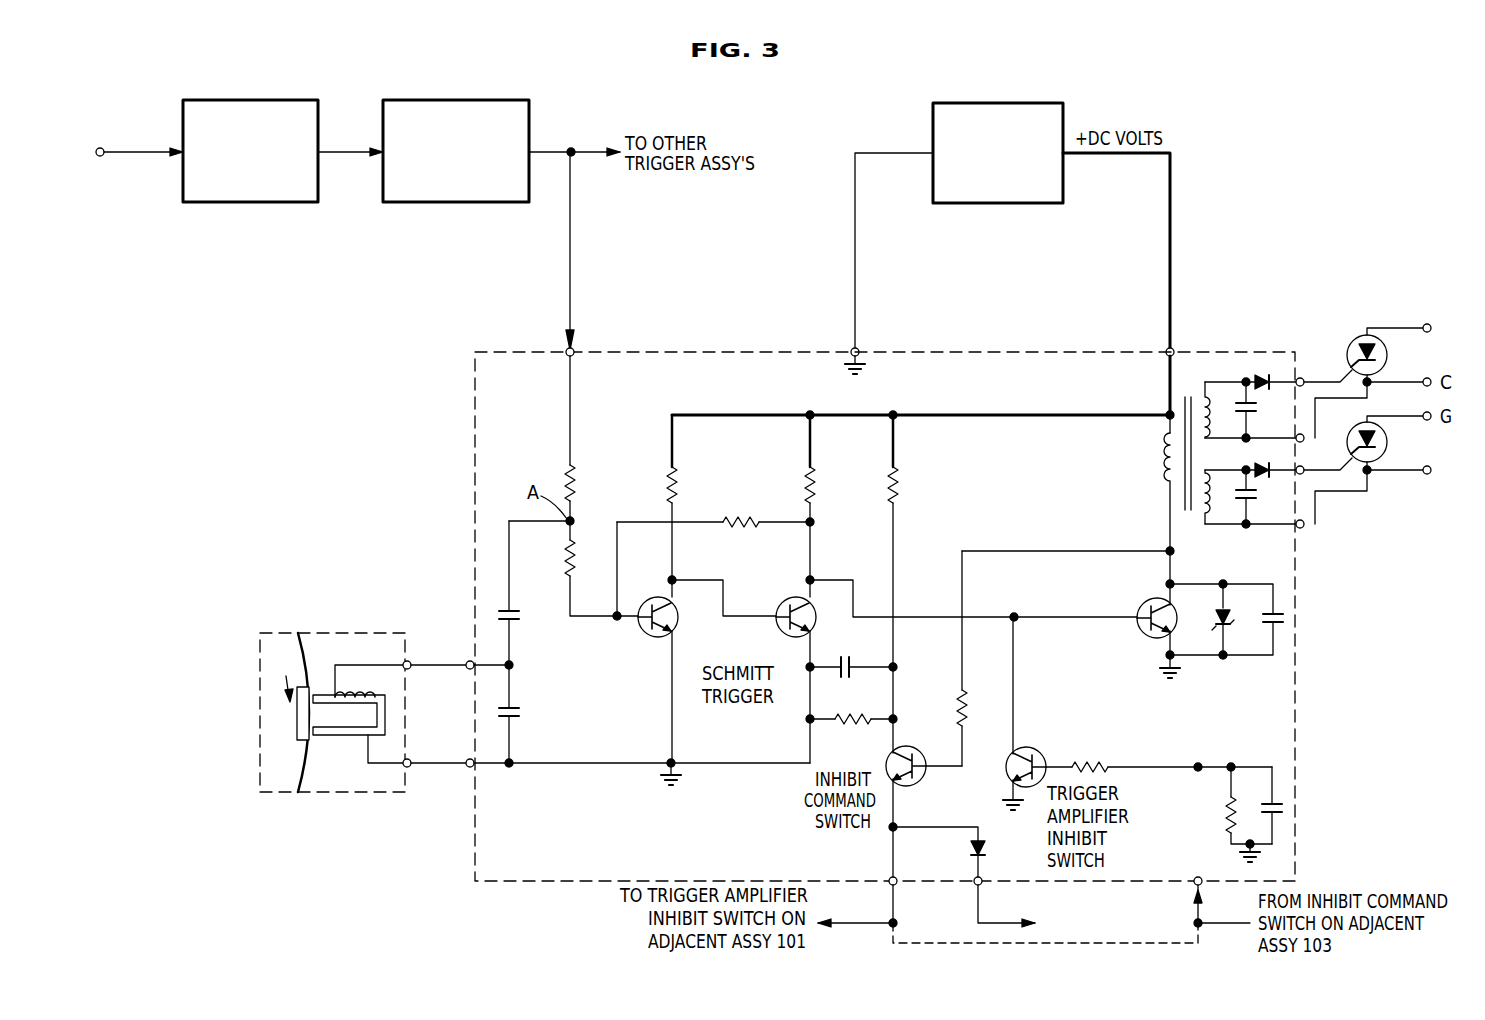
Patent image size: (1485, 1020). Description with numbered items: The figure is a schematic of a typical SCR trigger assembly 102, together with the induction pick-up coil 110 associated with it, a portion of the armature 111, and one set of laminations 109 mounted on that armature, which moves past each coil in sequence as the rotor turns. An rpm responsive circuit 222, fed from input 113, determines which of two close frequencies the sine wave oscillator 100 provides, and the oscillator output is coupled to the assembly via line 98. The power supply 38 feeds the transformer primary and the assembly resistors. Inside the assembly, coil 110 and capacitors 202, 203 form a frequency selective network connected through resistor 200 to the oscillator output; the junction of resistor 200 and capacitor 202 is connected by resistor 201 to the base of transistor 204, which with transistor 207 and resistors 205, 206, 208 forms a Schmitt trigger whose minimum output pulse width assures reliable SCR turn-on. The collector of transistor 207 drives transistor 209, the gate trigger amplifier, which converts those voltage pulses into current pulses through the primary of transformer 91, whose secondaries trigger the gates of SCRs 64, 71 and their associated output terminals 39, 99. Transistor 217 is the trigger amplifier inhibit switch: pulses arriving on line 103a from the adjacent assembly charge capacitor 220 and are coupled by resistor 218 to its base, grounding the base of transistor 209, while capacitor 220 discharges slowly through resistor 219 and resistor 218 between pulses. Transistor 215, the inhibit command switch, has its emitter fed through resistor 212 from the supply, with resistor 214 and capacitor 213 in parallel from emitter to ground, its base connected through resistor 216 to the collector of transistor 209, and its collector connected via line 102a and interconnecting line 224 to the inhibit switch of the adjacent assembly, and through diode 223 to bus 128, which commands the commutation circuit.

The input line 113 is at (158, 149).
The rpm responsive circuit 222 is at (314, 100).
The sine wave oscillator 100 is at (491, 100).
The line 98 is at (567, 149).
The power supply 38 is at (1034, 103).
The SCR trigger assembly 102 is at (475, 390).
The line 102a is at (898, 918).
The line 103a is at (1194, 922).
The bus 128 is at (1004, 922).
The interconnecting line 224 is at (1056, 940).
The laminations 109 is at (297, 713).
The induction pick-up coil 110 is at (355, 737).
The armature 111 is at (302, 652).
The resistor 200 is at (575, 488).
The resistor 201 is at (565, 560).
The capacitor 202 is at (520, 624).
The capacitor 203 is at (520, 712).
The transistor 204 is at (673, 632).
The resistor 205 is at (677, 488).
The resistor 206 is at (763, 526).
The transistor 207 is at (783, 635).
The resistor 208 is at (815, 488).
The transistor 209 is at (1154, 603).
The resistor 212 is at (898, 488).
The capacitor 213 is at (842, 678).
The resistor 214 is at (856, 732).
The inhibit command switch transistor 215 is at (908, 784).
The resistor 216 is at (967, 724).
The trigger amplifier inhibit switch transistor 217 is at (1020, 747).
The resistor 218 is at (1090, 750).
The resistor 219 is at (1238, 813).
The capacitor 220 is at (1276, 804).
The diode 223 is at (968, 849).
The transformer 91 is at (1205, 377).
The SCR 64 is at (1348, 362).
The SCR 71 is at (1350, 449).
The terminal 39 is at (1440, 327).
The terminal 99 is at (1441, 470).